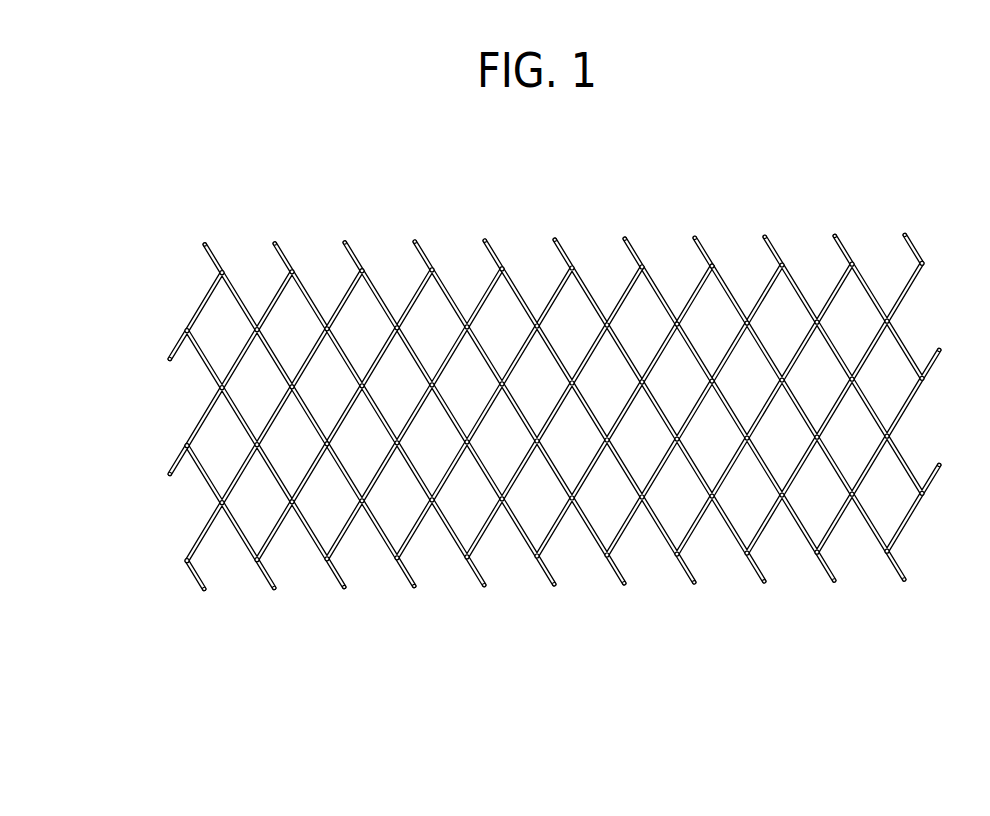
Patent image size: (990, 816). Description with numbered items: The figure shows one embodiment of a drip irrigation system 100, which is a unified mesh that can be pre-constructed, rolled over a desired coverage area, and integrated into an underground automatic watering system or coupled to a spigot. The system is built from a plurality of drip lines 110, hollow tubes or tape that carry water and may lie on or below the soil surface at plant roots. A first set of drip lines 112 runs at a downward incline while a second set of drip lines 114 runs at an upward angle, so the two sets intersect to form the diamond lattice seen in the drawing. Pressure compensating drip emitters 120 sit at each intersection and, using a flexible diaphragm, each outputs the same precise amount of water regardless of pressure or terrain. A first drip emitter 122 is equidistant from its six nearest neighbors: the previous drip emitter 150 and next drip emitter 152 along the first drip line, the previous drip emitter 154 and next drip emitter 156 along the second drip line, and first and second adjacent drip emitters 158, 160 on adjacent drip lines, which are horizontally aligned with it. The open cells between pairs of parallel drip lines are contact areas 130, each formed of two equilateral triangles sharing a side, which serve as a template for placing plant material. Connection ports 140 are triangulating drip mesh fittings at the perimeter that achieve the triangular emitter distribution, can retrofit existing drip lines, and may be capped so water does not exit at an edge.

The drip irrigation system 100 is at (538, 366).
The drip lines 110 is at (523, 300).
The first set of drip lines 112 is at (308, 418).
The second set of drip lines 114 is at (308, 475).
The drip emitters 120 is at (615, 313).
The first drip emitter 122 is at (706, 370).
The contact areas 130 is at (365, 315).
The connection ports 140 is at (169, 488).
The previous drip emitter on the first drip line 150 is at (682, 312).
The next drip emitter on the first drip line 152 is at (750, 439).
The previous drip emitter on the second drip line 154 is at (745, 312).
The next drip emitter on the second drip line 156 is at (680, 428).
The first adjacent drip emitter 158 is at (642, 368).
The second adjacent drip emitter 160 is at (785, 380).